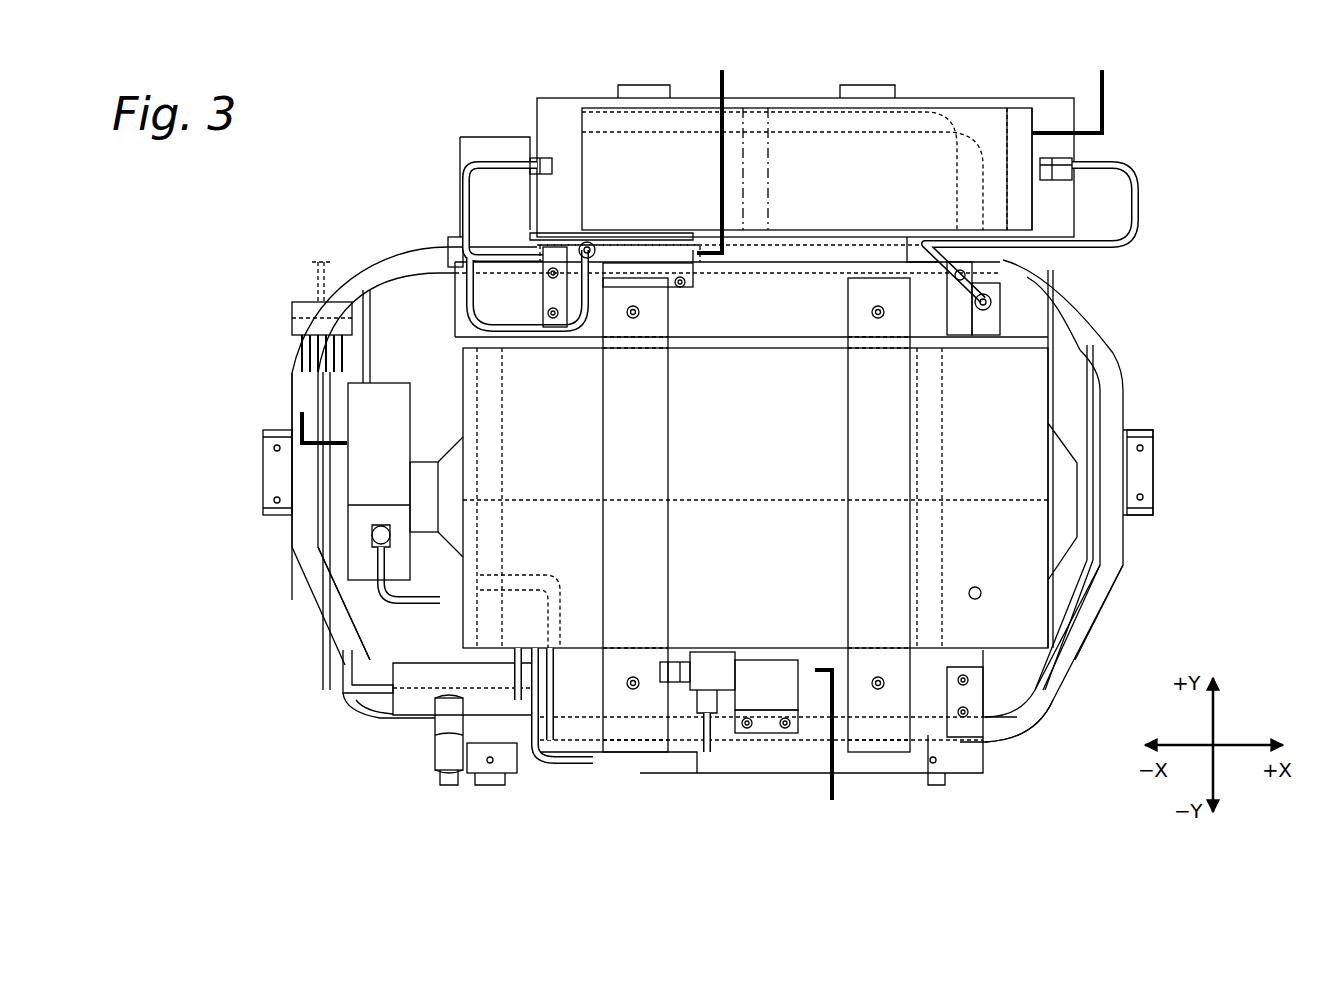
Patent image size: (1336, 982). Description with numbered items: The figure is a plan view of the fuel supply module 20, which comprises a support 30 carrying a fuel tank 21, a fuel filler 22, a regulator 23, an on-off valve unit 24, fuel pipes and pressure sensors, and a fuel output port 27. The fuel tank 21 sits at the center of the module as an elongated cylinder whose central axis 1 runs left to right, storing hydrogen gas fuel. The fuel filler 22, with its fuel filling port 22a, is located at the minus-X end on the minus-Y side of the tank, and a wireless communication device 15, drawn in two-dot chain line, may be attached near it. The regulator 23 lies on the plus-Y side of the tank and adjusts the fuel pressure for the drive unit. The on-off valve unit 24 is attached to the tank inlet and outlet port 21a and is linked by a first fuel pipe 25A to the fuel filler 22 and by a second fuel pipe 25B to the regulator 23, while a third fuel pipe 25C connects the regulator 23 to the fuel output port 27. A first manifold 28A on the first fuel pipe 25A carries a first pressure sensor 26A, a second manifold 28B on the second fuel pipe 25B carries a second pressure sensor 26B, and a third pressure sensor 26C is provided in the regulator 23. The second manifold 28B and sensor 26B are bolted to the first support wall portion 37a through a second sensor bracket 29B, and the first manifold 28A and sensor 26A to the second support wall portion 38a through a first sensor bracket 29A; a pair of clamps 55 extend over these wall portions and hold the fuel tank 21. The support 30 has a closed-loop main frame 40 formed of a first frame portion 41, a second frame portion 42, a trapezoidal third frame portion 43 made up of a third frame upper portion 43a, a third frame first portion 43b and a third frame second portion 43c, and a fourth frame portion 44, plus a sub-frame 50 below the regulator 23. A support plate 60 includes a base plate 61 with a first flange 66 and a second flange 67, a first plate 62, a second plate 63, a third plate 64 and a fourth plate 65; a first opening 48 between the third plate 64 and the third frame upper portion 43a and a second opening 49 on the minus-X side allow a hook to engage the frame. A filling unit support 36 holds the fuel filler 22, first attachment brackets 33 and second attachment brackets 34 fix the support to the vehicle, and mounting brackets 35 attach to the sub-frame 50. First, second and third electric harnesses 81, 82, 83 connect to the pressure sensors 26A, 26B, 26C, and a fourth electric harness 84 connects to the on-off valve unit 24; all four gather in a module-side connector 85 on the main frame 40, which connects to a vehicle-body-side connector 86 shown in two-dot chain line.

The central axis 1 is at (1012, 515).
The wireless communication device 15 is at (565, 740).
The fuel supply module 20 is at (400, 178).
The fuel tank 21 is at (770, 539).
The tank inlet and outlet port 21a is at (470, 488).
The fuel filler 22 is at (440, 760).
The fuel filling port 22a is at (452, 772).
The regulator 23 is at (824, 194).
The on-off valve unit 24 is at (394, 457).
The first fuel pipe 25A is at (638, 748).
The second fuel pipe 25B is at (497, 230).
The third fuel pipe 25C is at (1140, 195).
The first pressure sensor 26A is at (740, 652).
The second pressure sensor 26B is at (712, 300).
The third pressure sensor 26C is at (1020, 125).
The fuel output port 27 is at (1042, 282).
The first manifold 28A is at (720, 690).
The second manifold 28B is at (556, 232).
The first sensor bracket 29A is at (765, 690).
The second sensor bracket 29B is at (590, 240).
The support 30 is at (300, 605).
The first attachment bracket 33 is at (492, 788).
The second attachment bracket 34 is at (262, 472).
The mounting bracket 35 is at (645, 85).
The filling unit support 36 is at (368, 718).
The first support wall portion 37a is at (808, 300).
The second support wall portion 38a is at (900, 775).
The main frame 40 is at (335, 662).
The first frame portion 41 is at (442, 232).
The second frame portion 42 is at (425, 752).
The third frame portion 43 is at (1078, 668).
The third frame upper portion 43a is at (1145, 418).
The third frame first portion 43b is at (1112, 372).
The third frame second portion 43c is at (1090, 640).
The fourth frame portion 44 is at (322, 628).
The first opening 48 is at (1098, 590).
The second opening 49 is at (290, 505).
The sub-frame 50 is at (905, 100).
The clamp 55 is at (647, 542).
The support plate 60 is at (1040, 735).
The base plate 61 is at (1060, 348).
The first plate 62 is at (1060, 150).
The second plate 63 is at (980, 725).
The third plate 64 is at (1085, 605).
The fourth plate 65 is at (300, 556).
The first flange 66 is at (1075, 372).
The second flange 67 is at (370, 340).
The first electric harness 81 is at (838, 797).
The second electric harness 82 is at (735, 72).
The third electric harness 83 is at (1108, 108).
The fourth electric harness 84 is at (300, 420).
The module-side connector 85 is at (300, 328).
The vehicle-body-side connector 86 is at (292, 282).